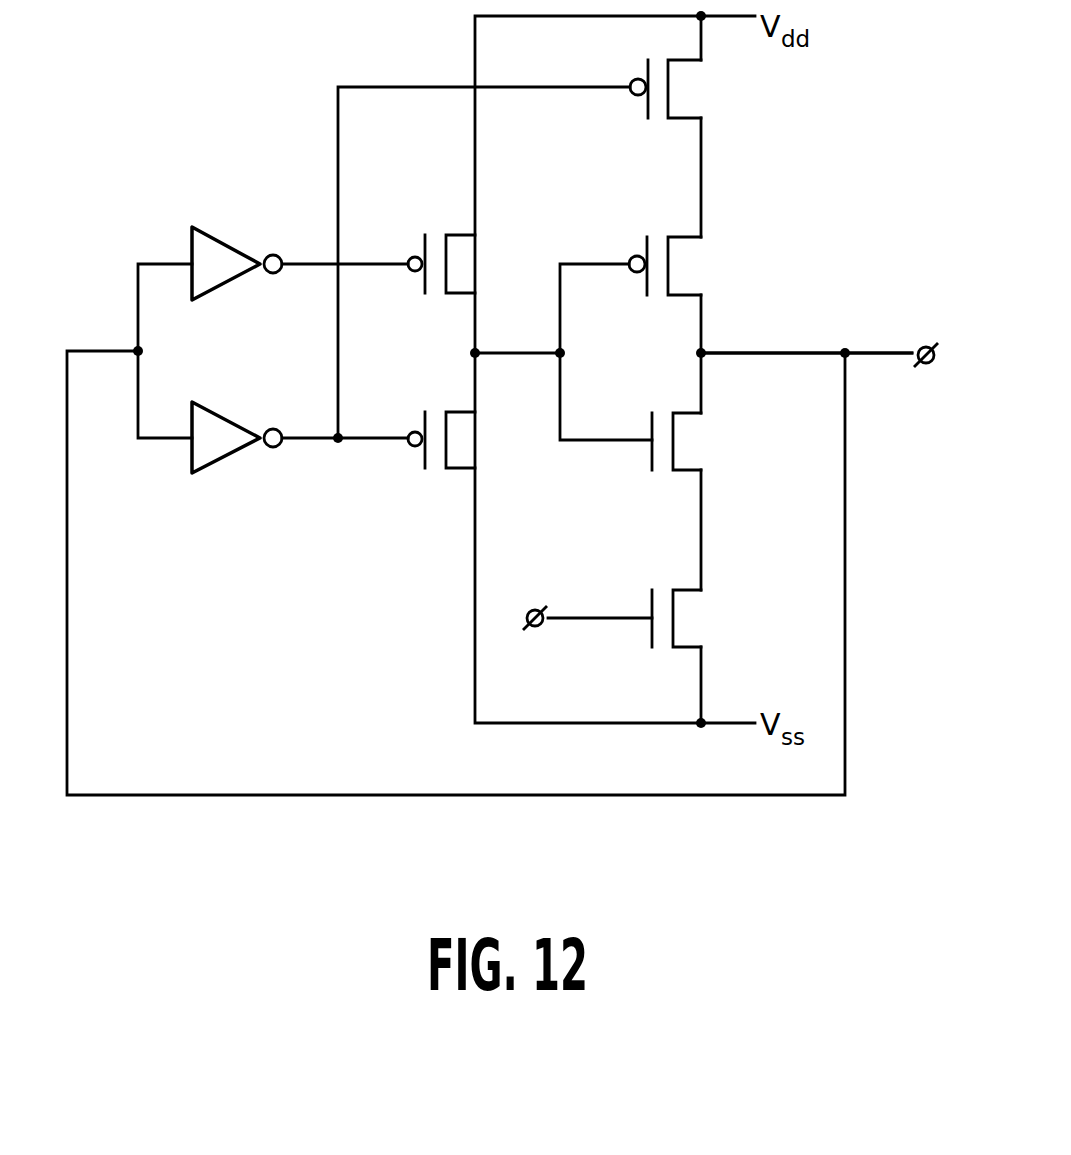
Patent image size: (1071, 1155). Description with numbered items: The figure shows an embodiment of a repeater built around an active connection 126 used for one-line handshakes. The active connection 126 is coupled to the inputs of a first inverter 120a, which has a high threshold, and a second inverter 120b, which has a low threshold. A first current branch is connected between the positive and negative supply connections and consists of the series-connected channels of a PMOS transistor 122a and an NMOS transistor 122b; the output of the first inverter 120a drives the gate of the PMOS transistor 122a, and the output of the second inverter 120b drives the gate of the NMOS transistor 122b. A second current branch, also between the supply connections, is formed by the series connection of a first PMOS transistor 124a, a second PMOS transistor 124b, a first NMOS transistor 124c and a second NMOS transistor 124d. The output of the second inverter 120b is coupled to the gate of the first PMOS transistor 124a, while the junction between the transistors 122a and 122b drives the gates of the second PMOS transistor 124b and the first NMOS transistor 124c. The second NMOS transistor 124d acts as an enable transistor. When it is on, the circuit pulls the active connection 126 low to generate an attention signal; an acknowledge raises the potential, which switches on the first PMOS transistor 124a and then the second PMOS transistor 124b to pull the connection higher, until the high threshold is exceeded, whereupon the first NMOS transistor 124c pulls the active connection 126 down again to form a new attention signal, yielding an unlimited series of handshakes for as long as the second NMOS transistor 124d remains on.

The first inverter 120a is at (210, 224).
The second inverter 120b is at (207, 400).
The PMOS transistor 122a is at (458, 264).
The NMOS transistor 122b is at (460, 452).
The first PMOS transistor 124a is at (697, 98).
The second PMOS transistor 124b is at (697, 268).
The first NMOS transistor 124c is at (695, 443).
The second NMOS transistor 124d is at (693, 620).
The active connection 126 is at (883, 352).